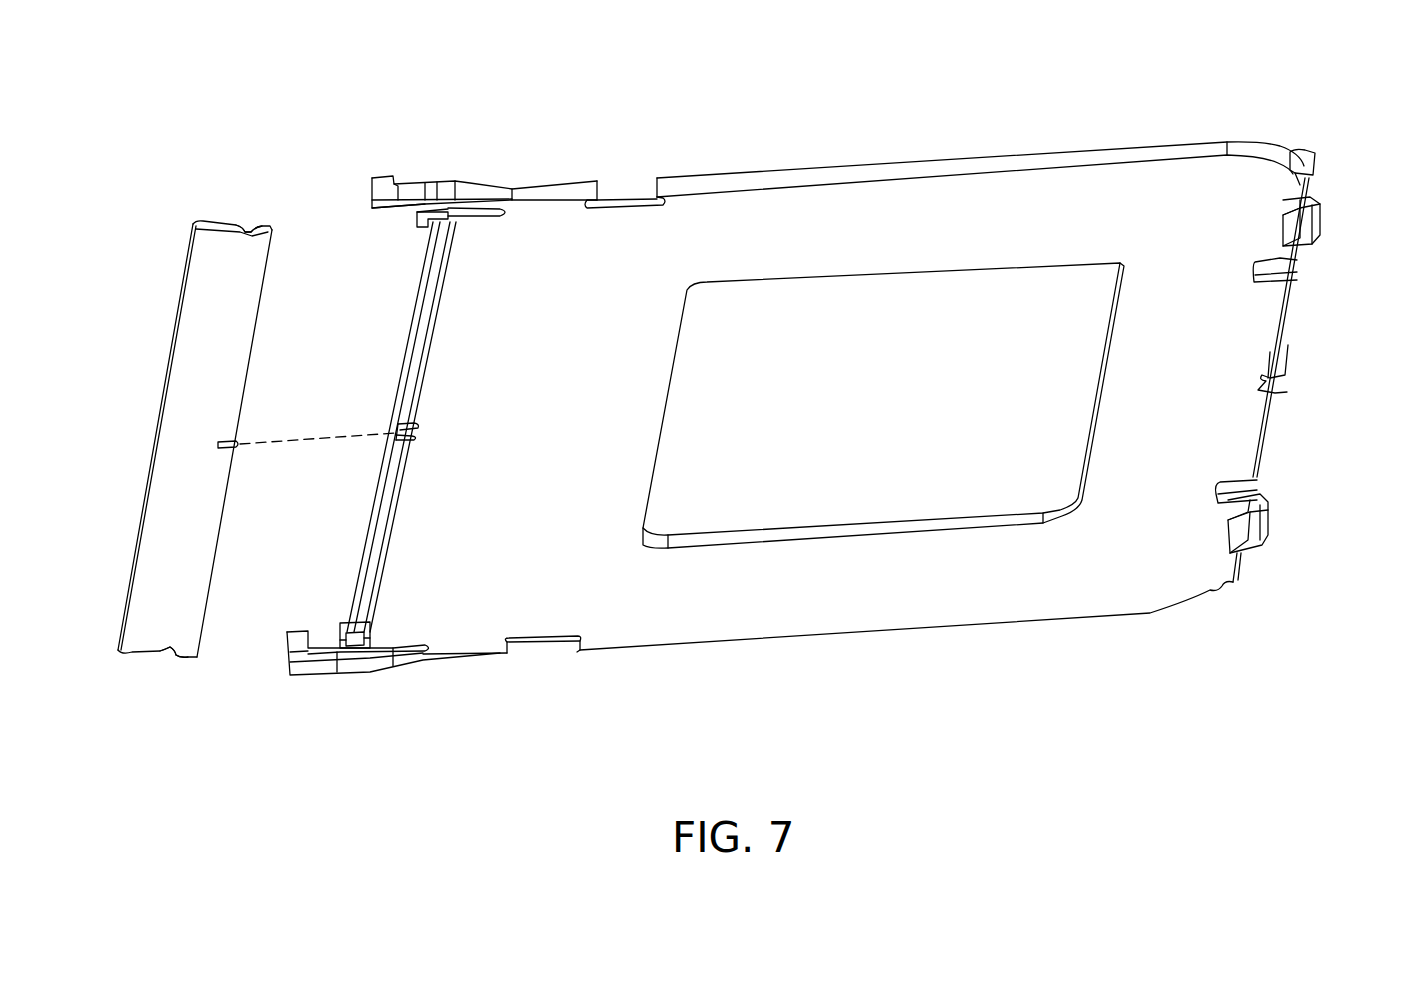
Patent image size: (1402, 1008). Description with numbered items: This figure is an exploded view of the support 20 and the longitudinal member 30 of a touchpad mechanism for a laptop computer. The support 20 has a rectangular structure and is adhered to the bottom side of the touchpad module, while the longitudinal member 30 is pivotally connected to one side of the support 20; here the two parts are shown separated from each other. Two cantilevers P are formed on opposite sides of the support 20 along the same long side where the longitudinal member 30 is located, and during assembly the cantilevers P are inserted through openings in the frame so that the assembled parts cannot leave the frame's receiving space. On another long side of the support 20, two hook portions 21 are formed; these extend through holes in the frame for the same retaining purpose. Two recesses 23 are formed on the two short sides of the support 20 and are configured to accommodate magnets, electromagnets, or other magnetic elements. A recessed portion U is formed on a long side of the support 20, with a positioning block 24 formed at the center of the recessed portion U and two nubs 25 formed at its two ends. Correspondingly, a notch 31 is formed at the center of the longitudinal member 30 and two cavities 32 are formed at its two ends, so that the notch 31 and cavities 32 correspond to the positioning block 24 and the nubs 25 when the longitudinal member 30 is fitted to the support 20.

The support 20 is at (1046, 160).
The hook portions 21 is at (1306, 205).
The recesses 23 is at (620, 200).
The positioning block 24 is at (386, 448).
The nubs 25 is at (417, 226).
The longitudinal member 30 is at (175, 322).
The notch 31 is at (215, 445).
The cavities 32 is at (245, 223).
The cantilevers P is at (428, 192).
The recessed portion U is at (414, 315).